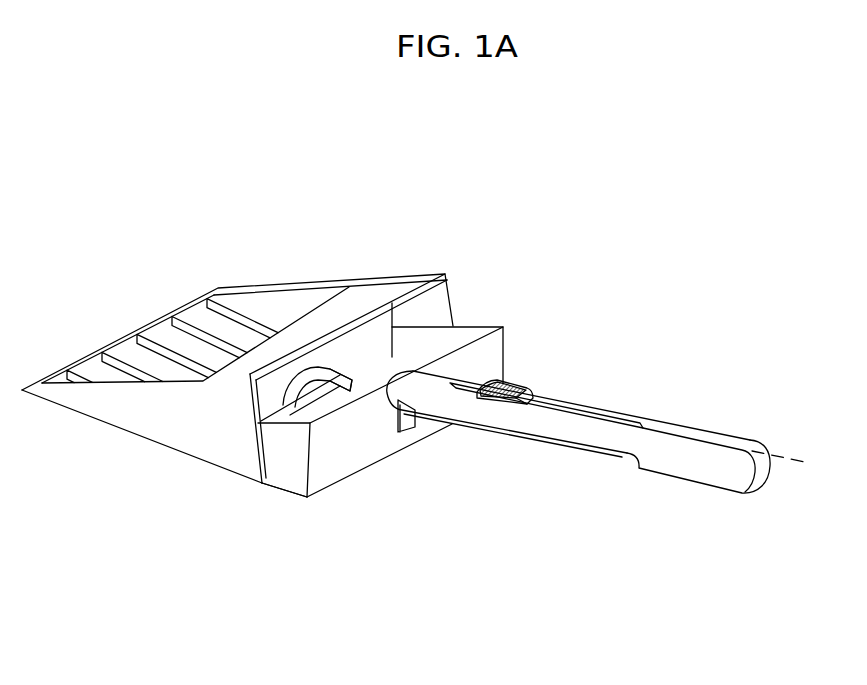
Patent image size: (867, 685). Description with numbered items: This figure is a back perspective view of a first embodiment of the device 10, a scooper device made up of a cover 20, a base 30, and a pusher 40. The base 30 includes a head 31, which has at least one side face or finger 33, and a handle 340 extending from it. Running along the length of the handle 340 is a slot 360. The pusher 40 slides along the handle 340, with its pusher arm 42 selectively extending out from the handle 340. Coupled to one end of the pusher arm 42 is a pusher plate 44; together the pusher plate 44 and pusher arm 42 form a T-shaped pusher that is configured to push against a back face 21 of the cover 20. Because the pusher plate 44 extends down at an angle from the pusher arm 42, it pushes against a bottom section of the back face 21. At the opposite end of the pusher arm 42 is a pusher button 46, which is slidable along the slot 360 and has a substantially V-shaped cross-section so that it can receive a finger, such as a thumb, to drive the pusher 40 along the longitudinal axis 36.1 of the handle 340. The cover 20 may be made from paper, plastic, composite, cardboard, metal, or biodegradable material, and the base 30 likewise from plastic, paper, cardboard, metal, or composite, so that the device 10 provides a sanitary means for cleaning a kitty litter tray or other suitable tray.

The device 10 is at (296, 237).
The cover 20 is at (154, 423).
The back face 21 is at (263, 385).
The base 30 is at (449, 472).
The head 31 is at (353, 453).
The side face or finger 33 is at (275, 480).
The pusher 40 is at (585, 300).
The pusher arm 42 is at (345, 385).
The pusher plate 44 is at (343, 370).
The pusher button 46 is at (513, 388).
The slot 360 is at (580, 408).
The handle 340 is at (688, 470).
The longitudinal axis 36.1 is at (788, 462).